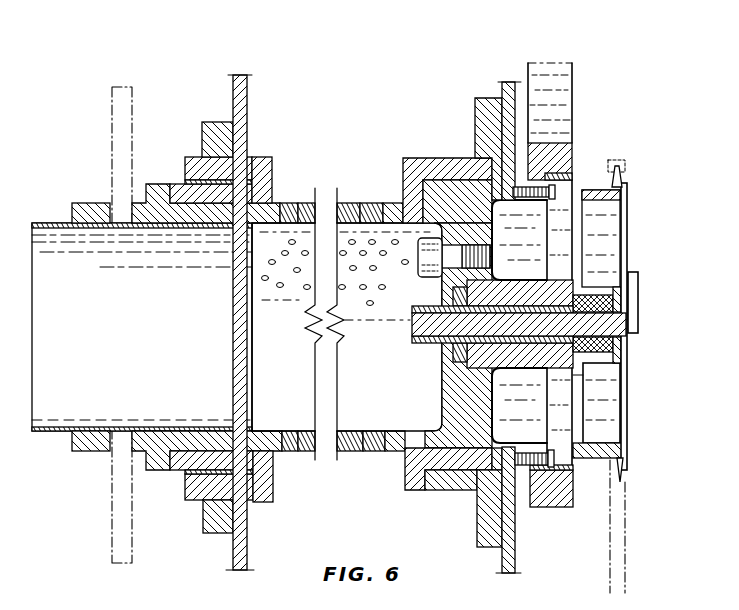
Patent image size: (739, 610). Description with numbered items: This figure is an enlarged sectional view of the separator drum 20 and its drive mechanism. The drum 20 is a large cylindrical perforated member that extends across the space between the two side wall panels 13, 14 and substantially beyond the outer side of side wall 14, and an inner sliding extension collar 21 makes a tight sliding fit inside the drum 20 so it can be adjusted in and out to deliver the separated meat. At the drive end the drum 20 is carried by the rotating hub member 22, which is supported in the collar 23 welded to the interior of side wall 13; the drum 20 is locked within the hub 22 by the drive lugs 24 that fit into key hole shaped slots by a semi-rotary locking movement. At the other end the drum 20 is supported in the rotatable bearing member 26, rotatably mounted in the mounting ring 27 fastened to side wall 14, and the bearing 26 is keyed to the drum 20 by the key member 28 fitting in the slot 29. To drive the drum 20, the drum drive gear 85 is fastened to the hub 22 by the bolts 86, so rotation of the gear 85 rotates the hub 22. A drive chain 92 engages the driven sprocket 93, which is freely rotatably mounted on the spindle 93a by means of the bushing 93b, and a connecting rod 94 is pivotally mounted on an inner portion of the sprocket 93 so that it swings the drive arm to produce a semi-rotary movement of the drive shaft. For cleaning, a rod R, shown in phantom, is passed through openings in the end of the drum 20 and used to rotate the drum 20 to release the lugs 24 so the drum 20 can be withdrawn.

The rod R is at (112, 138).
The inner sliding extension collar 21 is at (50, 222).
The slot 29 is at (143, 193).
The key member 28 is at (163, 187).
The mounting ring 27 is at (225, 121).
The side wall panel 14 is at (248, 80).
The rotatable bearing member 26 is at (250, 192).
The separator drum 20 is at (372, 201).
The rotating hub member 22 is at (413, 158).
The collar 23 is at (475, 137).
The side wall panel 13 is at (498, 90).
The drum drive gear 85 is at (553, 157).
The bolts 86 is at (560, 187).
The driven sprocket 93 is at (625, 183).
The bushing 93b is at (605, 282).
The connecting rod 94 is at (638, 295).
The spindle 93a is at (605, 322).
The drive chain 92 is at (625, 547).
The drive lugs 24 is at (418, 272).